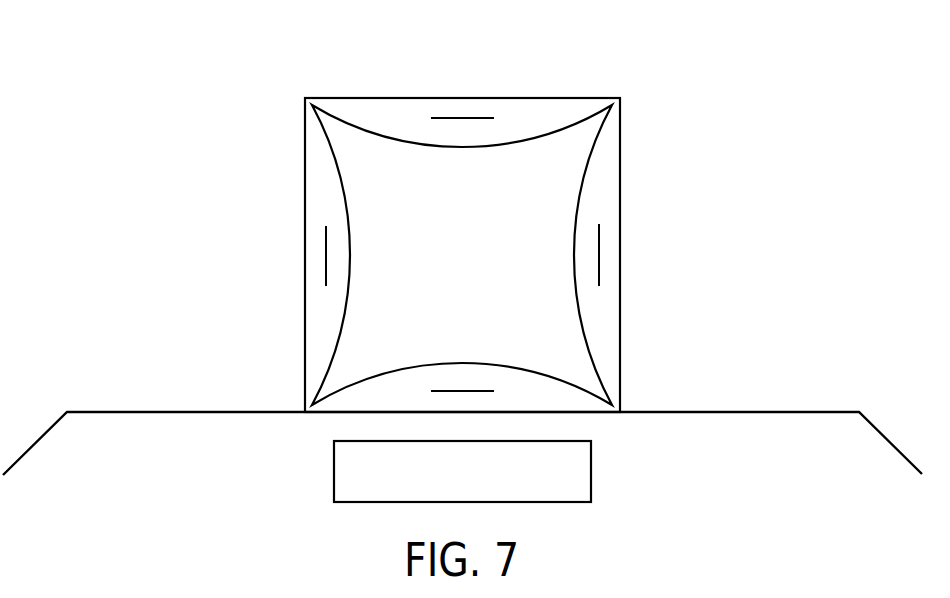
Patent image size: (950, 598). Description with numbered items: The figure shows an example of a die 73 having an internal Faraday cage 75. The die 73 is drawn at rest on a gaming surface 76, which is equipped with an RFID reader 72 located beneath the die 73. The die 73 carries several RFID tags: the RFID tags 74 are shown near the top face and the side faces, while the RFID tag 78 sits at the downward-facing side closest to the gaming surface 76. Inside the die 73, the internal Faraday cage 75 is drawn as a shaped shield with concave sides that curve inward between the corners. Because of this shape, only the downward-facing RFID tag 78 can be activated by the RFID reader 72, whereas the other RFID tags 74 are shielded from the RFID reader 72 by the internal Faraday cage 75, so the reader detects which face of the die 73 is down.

The RFID reader 72 is at (591, 469).
The die 73 is at (537, 97).
The RFID tags 74 is at (462, 118).
The internal Faraday cage 75 is at (602, 377).
The gaming surface 76 is at (741, 411).
The RFID tag 78 is at (462, 391).